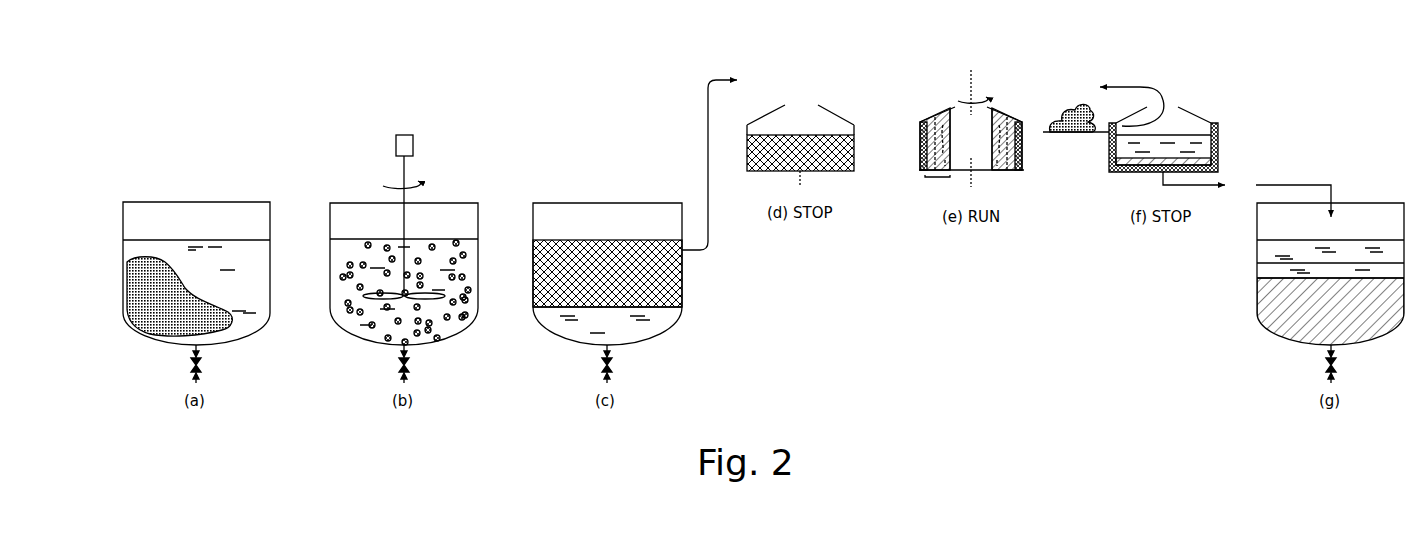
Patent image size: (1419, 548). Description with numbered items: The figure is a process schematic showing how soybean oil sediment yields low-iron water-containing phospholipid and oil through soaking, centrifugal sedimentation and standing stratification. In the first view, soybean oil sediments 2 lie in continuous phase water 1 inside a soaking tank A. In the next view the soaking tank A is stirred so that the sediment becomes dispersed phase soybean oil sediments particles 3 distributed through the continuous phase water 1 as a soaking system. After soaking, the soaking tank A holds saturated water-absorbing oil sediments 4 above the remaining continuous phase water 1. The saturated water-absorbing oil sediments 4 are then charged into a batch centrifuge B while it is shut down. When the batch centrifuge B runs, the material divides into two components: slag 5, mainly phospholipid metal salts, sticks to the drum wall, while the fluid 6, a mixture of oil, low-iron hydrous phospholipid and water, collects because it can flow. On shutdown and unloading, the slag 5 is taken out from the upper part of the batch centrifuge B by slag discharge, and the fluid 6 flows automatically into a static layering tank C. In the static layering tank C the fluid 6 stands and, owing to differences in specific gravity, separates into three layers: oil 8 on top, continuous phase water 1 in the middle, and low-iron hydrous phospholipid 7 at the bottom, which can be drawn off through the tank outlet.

The continuous phase water 1 is at (132, 248).
The soybean oil sediments 2 is at (143, 305).
The dispersed phase soybean oil sediments particles 3 is at (352, 303).
The saturated water-absorbing oil sediments 4 is at (545, 268).
The slag 5 is at (917, 145).
The fluid 6 is at (938, 174).
The low-iron hydrous phospholipid 7 is at (1276, 323).
The oil 8 is at (1265, 250).
The soaking tank A is at (402, 259).
The batch centrifuge B is at (982, 128).
The static layering tank C is at (1330, 282).